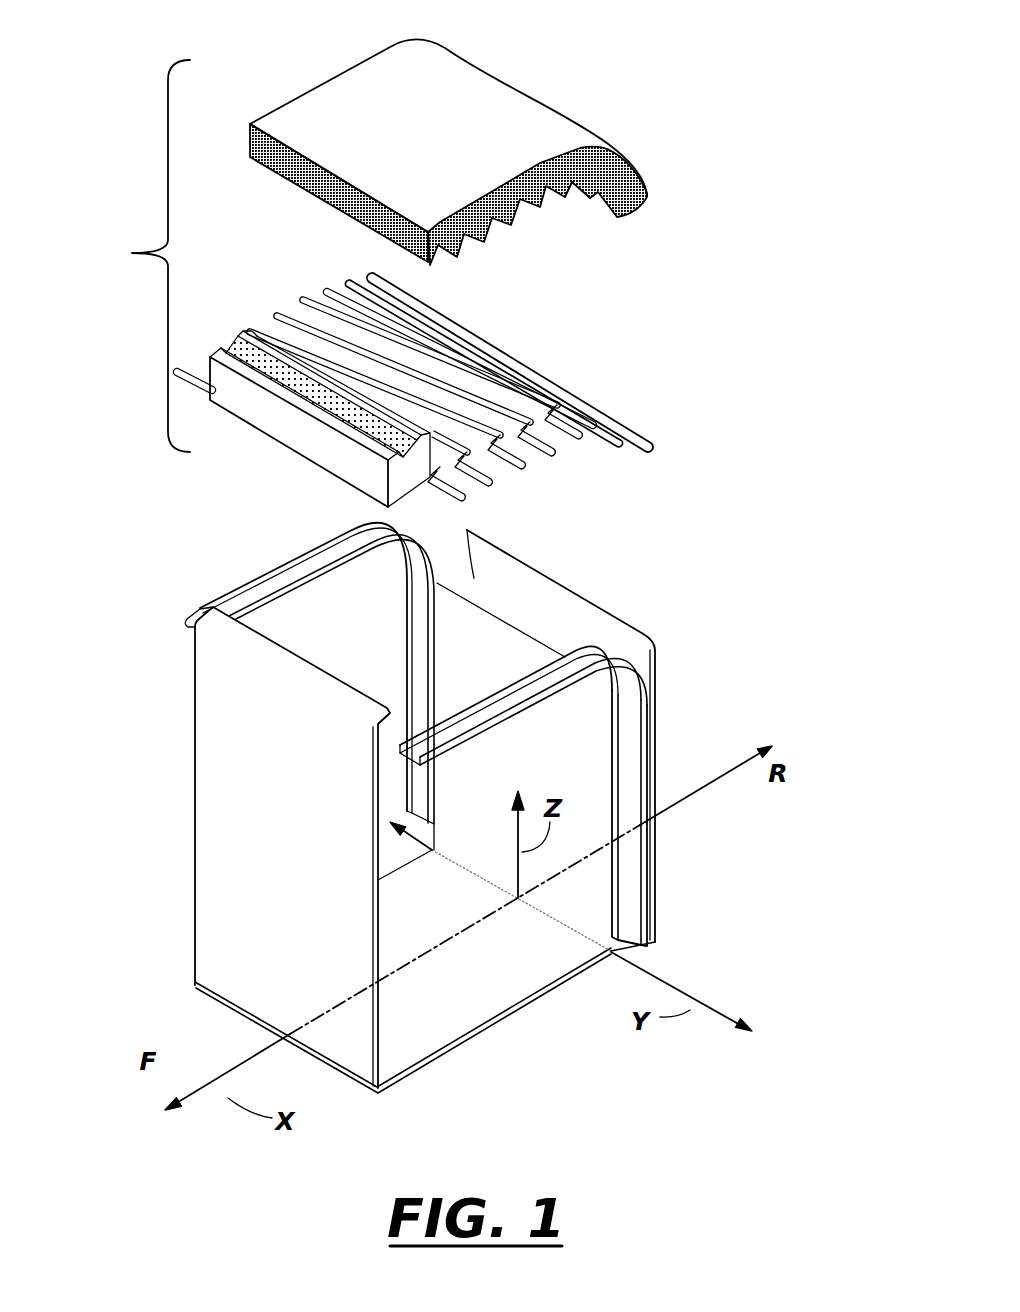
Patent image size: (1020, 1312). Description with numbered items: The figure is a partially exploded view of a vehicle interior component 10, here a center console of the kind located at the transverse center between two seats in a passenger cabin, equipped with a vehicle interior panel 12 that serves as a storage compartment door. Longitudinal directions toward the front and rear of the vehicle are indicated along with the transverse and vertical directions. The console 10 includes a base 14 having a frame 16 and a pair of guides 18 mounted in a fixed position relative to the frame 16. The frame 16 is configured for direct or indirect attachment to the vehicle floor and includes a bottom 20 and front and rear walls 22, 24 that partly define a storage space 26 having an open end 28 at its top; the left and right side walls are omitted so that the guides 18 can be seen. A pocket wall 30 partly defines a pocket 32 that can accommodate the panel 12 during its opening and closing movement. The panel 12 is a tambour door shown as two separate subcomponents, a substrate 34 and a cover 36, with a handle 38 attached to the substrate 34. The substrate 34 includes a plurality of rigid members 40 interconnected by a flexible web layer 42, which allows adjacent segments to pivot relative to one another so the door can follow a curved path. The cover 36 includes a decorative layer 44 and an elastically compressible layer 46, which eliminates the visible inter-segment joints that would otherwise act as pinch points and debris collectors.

The vehicle interior component 10 is at (728, 270).
The vehicle interior panel 12 is at (131, 256).
The base 14 is at (182, 667).
The frame 16 is at (192, 788).
The guides 18 is at (328, 557).
The bottom 20 is at (470, 1040).
The front wall 22 is at (210, 942).
The rear wall 24 is at (445, 690).
The storage space 26 is at (455, 650).
The open end 28 is at (253, 628).
The pocket wall 30 is at (657, 748).
The pocket 32 is at (567, 630).
The substrate 34 is at (545, 368).
The cover 36 is at (481, 73).
The handle 38 is at (250, 345).
The rigid members 40 is at (487, 488).
The flexible web layer 42 is at (480, 392).
The decorative layer 44 is at (401, 77).
The elastically compressible layer 46 is at (521, 212).